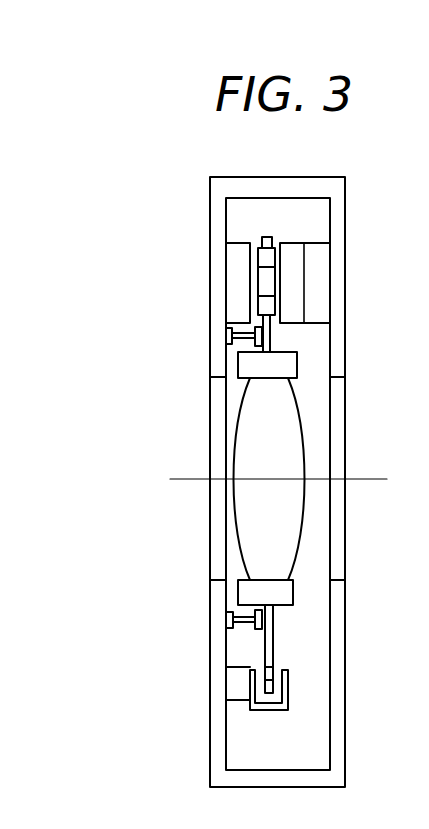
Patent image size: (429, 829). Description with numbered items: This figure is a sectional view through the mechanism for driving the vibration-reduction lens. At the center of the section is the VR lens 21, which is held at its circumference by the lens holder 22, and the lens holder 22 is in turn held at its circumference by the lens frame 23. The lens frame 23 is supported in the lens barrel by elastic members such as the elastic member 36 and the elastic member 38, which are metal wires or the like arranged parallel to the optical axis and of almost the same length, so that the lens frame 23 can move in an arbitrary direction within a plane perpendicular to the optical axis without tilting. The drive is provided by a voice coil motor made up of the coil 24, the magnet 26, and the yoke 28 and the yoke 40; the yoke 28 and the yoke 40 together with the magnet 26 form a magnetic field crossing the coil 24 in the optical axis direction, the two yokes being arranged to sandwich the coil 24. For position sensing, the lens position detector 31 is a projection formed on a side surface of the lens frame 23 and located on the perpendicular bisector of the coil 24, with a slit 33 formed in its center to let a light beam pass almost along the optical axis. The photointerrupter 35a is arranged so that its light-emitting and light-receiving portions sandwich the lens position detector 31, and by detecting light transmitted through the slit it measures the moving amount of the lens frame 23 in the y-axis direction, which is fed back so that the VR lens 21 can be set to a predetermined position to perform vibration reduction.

The VR lens 21 is at (244, 541).
The lens holder 22 is at (240, 592).
The lens frame 23 is at (267, 638).
The coil 24 is at (272, 255).
The magnet 26 is at (296, 258).
The yoke 28 is at (243, 263).
The lens position detector 31 is at (274, 667).
The slit 33 is at (289, 681).
The photointerrupter 35a is at (288, 694).
The elastic member 36 is at (244, 340).
The elastic member 38 is at (248, 628).
The yoke 40 is at (318, 305).